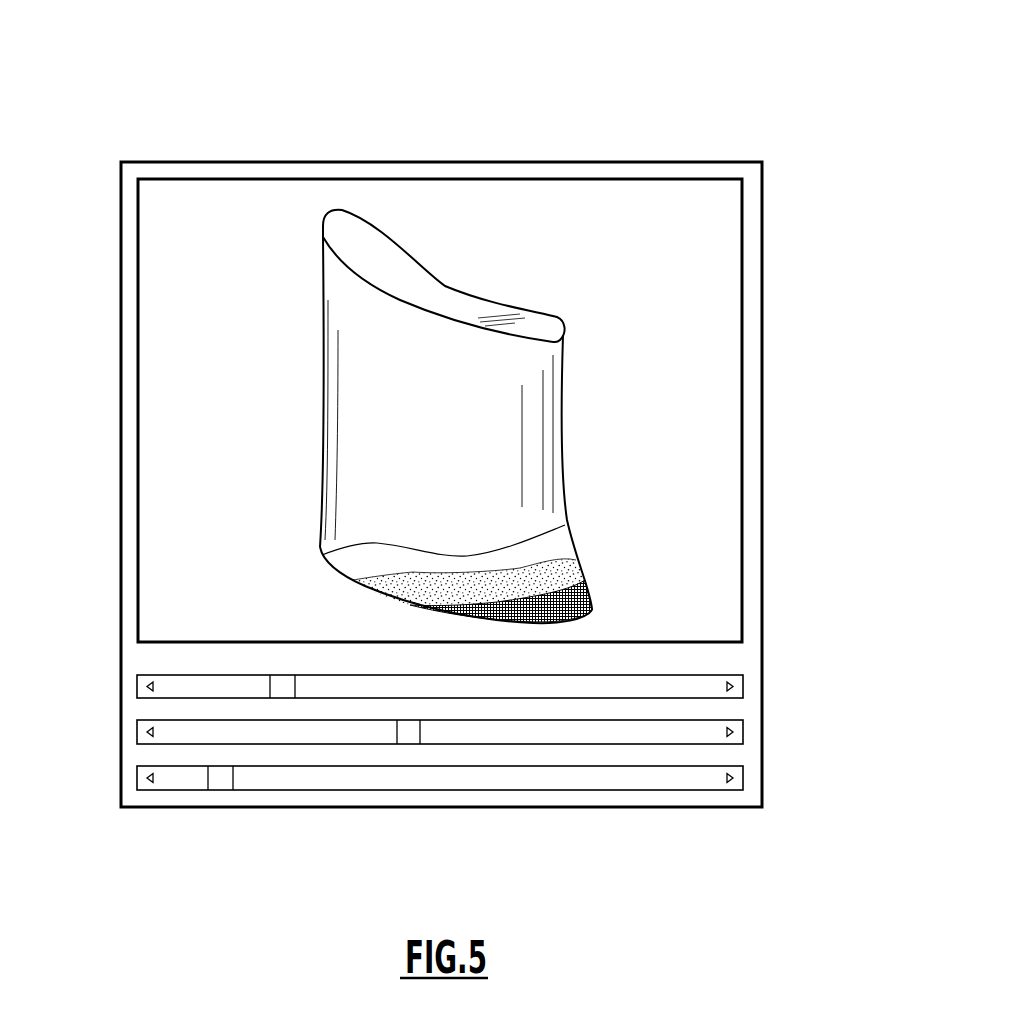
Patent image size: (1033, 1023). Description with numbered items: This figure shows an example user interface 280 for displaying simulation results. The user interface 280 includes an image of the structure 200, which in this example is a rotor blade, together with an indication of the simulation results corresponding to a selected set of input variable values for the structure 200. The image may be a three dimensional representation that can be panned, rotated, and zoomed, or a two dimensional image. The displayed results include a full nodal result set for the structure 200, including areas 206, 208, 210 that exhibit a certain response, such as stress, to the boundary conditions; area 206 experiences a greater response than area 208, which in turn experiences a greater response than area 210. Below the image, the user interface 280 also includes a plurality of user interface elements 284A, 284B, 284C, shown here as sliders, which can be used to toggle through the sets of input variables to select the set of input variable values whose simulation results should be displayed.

The user interface 280 is at (734, 88).
The structure 200 is at (505, 281).
The area 206 is at (605, 610).
The area 208 is at (583, 565).
The area 210 is at (570, 536).
The user interface element 284A is at (137, 686).
The user interface element 284B is at (137, 732).
The user interface element 284C is at (137, 778).